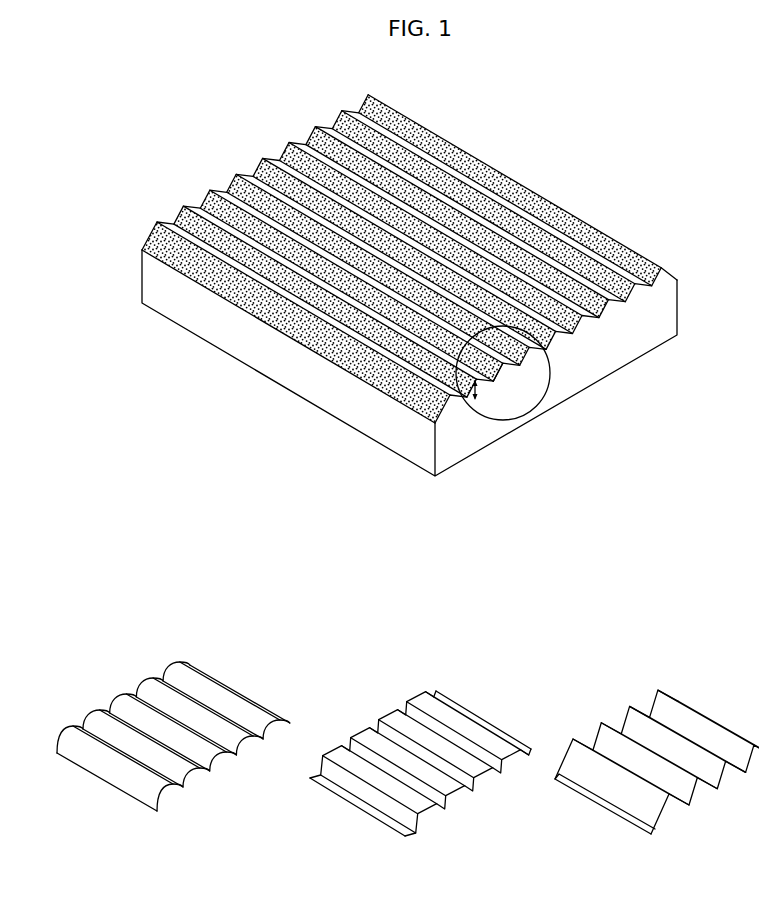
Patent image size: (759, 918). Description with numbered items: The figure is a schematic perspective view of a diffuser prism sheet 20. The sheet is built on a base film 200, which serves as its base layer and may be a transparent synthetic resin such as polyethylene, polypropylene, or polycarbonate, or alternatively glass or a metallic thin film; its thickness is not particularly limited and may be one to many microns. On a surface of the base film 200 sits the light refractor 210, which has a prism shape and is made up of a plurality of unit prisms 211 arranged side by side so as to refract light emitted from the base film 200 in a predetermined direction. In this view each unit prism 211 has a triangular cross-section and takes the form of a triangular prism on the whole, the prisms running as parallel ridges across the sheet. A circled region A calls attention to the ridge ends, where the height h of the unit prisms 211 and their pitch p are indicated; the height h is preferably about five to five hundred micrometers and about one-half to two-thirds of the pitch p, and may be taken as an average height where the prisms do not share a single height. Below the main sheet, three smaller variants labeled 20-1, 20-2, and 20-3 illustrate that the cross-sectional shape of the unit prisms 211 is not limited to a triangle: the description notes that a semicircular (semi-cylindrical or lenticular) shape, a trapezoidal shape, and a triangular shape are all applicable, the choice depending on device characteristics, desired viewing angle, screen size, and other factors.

The diffuser prism sheet 20 is at (433, 287).
The base film 200 is at (563, 383).
The light refractor 210 is at (370, 88).
The unit prism 211 is at (668, 277).
The enlarged detail region A is at (474, 404).
The height of the unit prisms h is at (473, 404).
The pitch of the unit prisms p is at (512, 384).
The lenticular (semi-cylindrical) pattern variant 20-1 is at (173, 714).
The trapezoidal pattern variant 20-2 is at (420, 730).
The triangular (zigzag) pattern variant 20-3 is at (657, 734).